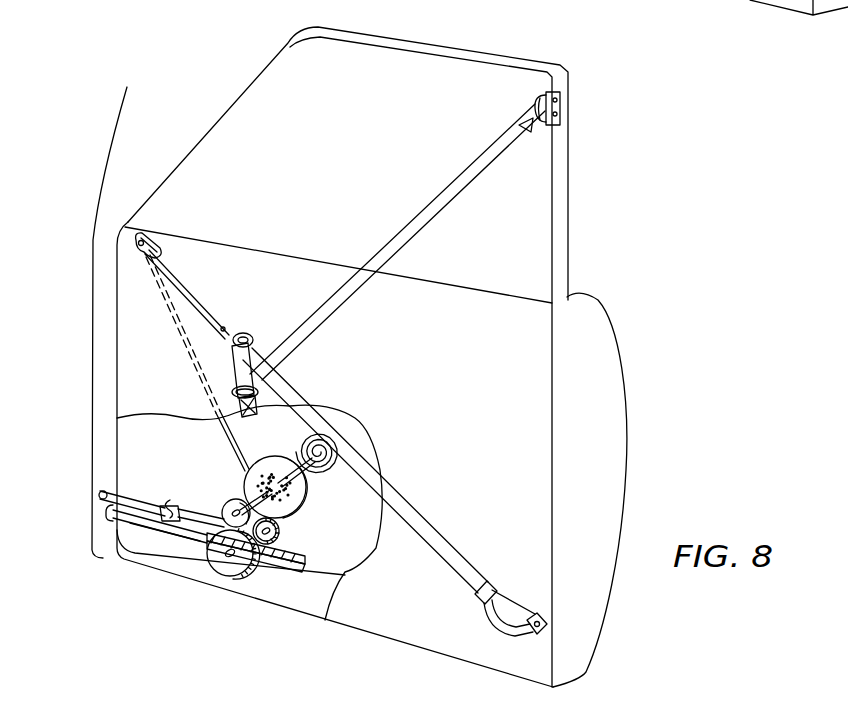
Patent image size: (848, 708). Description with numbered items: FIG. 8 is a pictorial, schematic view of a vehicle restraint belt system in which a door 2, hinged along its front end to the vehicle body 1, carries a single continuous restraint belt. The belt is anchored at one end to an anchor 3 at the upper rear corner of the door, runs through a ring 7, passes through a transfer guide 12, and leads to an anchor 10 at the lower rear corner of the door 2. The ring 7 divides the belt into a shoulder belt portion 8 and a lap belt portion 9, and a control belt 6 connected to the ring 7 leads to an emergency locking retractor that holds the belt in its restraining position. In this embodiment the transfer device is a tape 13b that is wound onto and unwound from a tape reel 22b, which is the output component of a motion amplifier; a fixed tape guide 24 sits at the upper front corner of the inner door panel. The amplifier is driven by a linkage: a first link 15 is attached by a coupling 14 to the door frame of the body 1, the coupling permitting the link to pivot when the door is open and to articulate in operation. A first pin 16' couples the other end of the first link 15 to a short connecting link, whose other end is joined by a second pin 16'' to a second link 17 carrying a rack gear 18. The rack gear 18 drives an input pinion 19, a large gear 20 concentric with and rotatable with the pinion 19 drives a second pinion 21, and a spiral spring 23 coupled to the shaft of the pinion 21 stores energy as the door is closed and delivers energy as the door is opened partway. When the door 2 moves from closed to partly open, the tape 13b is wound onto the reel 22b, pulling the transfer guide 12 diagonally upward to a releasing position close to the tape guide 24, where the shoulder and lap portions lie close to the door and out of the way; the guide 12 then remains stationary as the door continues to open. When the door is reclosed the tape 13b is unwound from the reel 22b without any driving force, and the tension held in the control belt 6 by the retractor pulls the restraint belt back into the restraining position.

The vehicle body 1 is at (93, 141).
The door 2 is at (590, 328).
The anchor 3 is at (538, 97).
The control belt 6 is at (262, 399).
The ring 7 is at (222, 408).
The shoulder belt portion 8 is at (410, 218).
The lap belt portion 9 is at (421, 520).
The anchor 10 is at (507, 593).
The transfer guide 12 is at (247, 332).
The tape 13b is at (200, 302).
The coupling 14 is at (103, 492).
The first link 15 is at (133, 495).
The first pin 16' is at (160, 515).
The second pin 16'' is at (77, 563).
The second link 17 is at (163, 523).
The rack gear 18 is at (340, 572).
The input pinion 19 is at (283, 528).
The large gear 20 is at (230, 570).
The second pinion 21 is at (223, 513).
The tape reel 22b is at (300, 497).
The spiral spring 23 is at (338, 430).
The fixed tape guide 24 is at (152, 242).